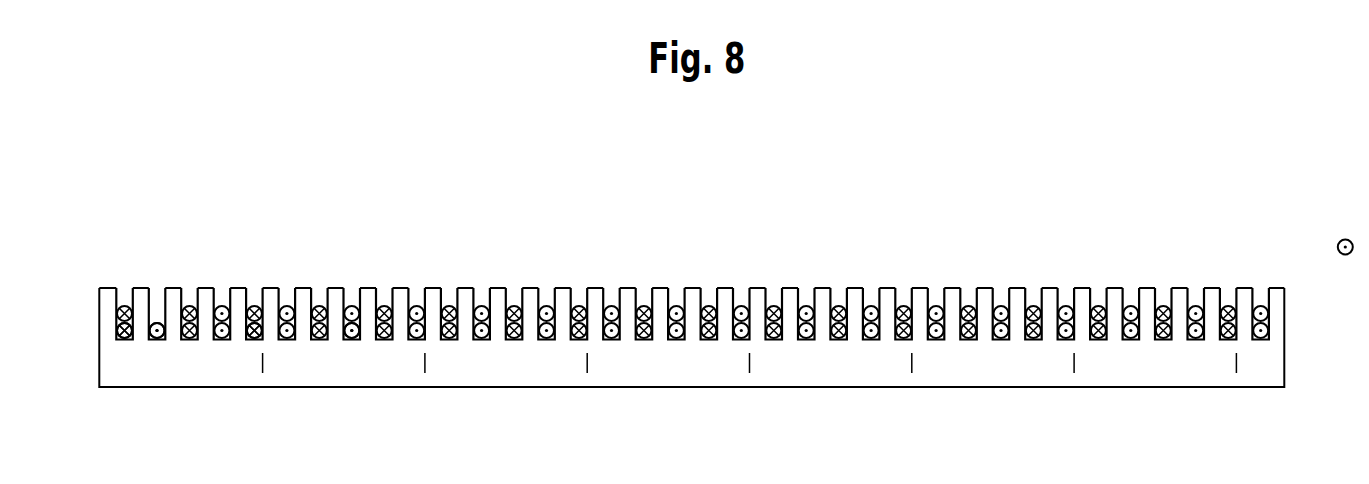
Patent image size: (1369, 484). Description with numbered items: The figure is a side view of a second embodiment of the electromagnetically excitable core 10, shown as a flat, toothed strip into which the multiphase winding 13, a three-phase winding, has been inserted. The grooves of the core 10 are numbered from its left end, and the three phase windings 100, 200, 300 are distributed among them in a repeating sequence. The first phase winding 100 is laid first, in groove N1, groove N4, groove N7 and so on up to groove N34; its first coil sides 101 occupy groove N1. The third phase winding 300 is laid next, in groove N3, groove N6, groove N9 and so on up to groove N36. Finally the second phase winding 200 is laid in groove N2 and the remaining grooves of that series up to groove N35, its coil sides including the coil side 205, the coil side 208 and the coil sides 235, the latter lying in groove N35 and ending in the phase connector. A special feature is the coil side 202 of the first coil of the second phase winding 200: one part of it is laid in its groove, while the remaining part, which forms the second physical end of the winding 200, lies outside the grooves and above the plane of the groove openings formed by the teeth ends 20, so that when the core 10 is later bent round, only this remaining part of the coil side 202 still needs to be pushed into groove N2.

The core 10 is at (606, 266).
The multiphase winding 13 is at (548, 293).
The teeth ends 20 is at (727, 300).
The first phase winding 100 is at (119, 285).
The coil side 101 is at (123, 338).
The second phase winding 200 is at (153, 285).
The coil side 202 is at (1345, 239).
The coil side 205 is at (255, 338).
The coil side 208 is at (353, 338).
The coil side 235 is at (1228, 338).
The third phase winding 300 is at (1256, 286).
The groove N1 is at (125, 295).
The groove N2 is at (158, 295).
The groove N3 is at (188, 295).
The groove N4 is at (222, 295).
The groove N6 is at (287, 295).
The groove N7 is at (318, 295).
The groove N9 is at (385, 295).
The groove N34 is at (1195, 297).
The groove N36 is at (1262, 297).